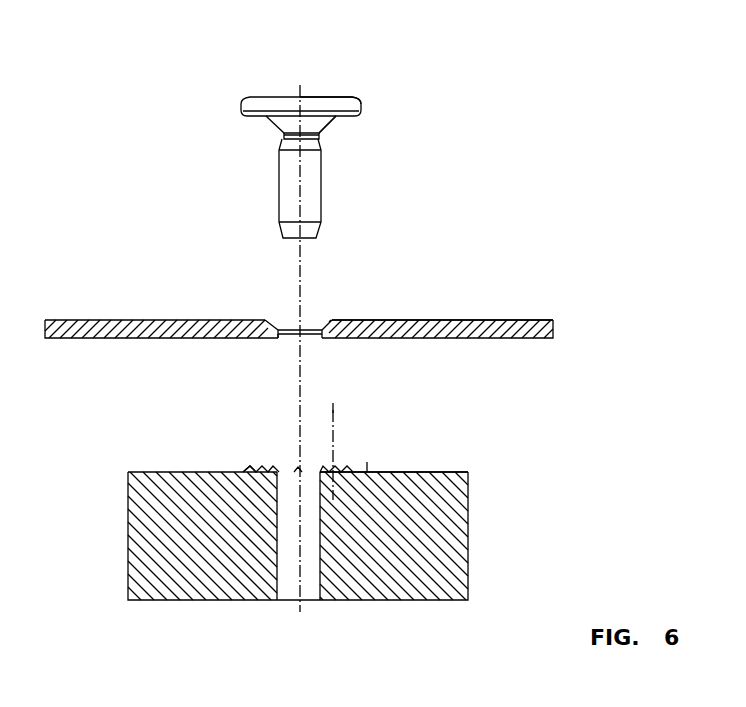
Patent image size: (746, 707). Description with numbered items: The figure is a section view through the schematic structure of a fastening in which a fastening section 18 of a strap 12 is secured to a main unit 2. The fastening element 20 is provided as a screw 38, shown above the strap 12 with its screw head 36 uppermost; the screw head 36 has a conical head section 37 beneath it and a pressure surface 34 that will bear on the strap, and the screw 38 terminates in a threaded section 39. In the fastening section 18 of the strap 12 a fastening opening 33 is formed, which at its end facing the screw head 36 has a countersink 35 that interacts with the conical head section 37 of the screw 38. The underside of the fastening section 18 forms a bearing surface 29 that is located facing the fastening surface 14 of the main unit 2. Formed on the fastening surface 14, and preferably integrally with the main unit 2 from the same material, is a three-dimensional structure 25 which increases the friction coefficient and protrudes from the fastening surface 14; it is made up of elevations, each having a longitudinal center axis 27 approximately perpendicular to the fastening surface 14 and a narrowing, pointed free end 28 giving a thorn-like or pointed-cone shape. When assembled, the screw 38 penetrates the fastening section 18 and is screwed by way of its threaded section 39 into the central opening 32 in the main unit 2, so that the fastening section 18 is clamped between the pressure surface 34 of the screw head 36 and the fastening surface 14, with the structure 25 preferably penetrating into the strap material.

The main unit 2 is at (142, 517).
The strap 12 is at (100, 320).
The fastening surface 14 is at (367, 470).
The fastening section 18 is at (368, 325).
The fastening element 20 is at (245, 102).
The structure 25 is at (251, 432).
The longitudinal center axis 27 is at (335, 407).
The free end 28 is at (348, 466).
The bearing surface 29 is at (269, 349).
The central opening 32 is at (288, 590).
The fastening opening 33 is at (310, 327).
The pressure surface 34 is at (343, 122).
The countersink 35 is at (282, 320).
The screw head 36 is at (348, 100).
The conical head section 37 is at (285, 127).
The screw 38 is at (311, 68).
The threaded section 39 is at (292, 203).